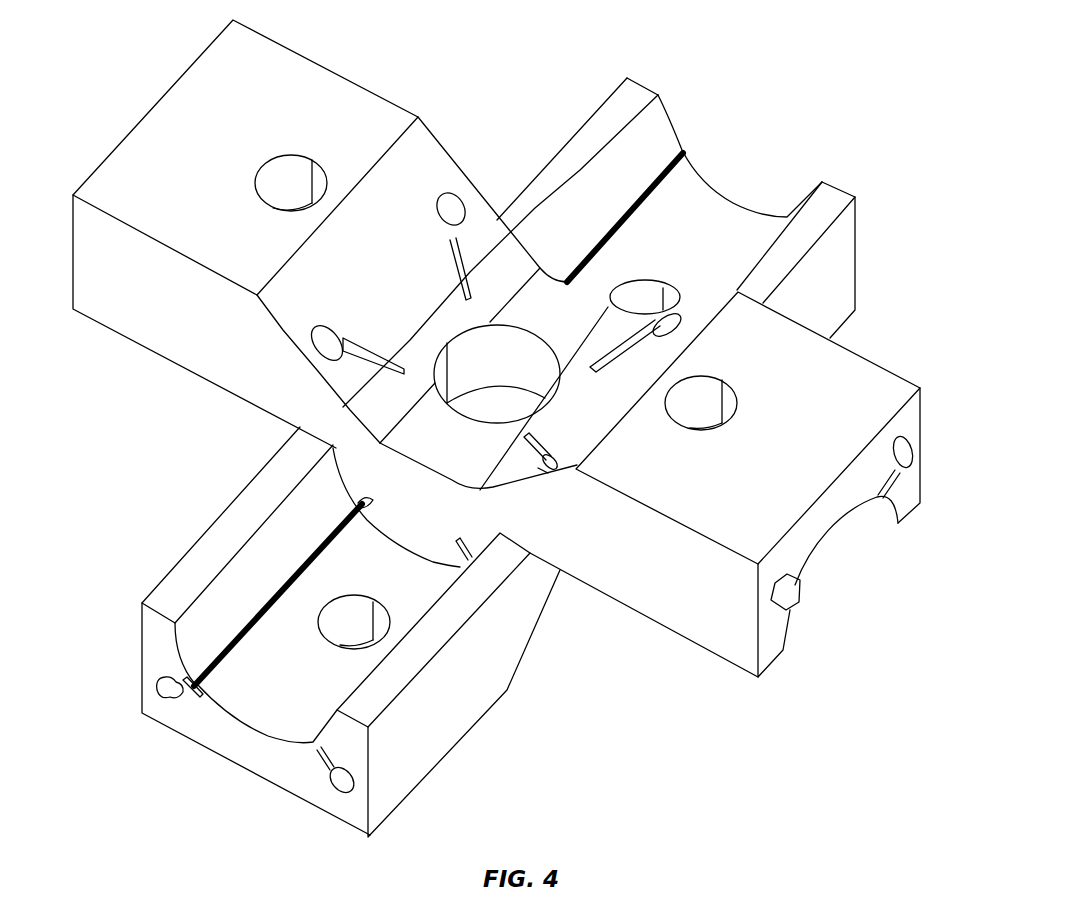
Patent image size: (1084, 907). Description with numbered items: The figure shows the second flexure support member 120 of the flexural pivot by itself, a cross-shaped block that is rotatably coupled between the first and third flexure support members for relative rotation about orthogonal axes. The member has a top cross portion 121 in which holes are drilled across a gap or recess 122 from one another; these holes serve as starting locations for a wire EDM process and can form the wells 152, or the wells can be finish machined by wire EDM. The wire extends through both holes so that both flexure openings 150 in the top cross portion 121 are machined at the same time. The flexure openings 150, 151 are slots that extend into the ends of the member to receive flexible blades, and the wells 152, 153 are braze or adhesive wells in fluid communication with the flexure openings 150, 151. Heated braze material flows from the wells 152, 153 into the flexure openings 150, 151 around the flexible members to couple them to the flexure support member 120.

The second flexure support member 120 is at (653, 40).
The top cross portion 121 is at (372, 75).
The gap or recess 122 is at (560, 305).
The flexure openings 150 is at (355, 367).
The flexure openings 151 is at (468, 238).
The wells 152 is at (318, 355).
The wells 153 is at (449, 187).